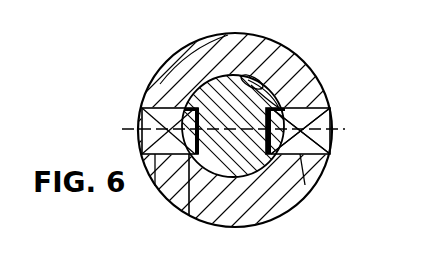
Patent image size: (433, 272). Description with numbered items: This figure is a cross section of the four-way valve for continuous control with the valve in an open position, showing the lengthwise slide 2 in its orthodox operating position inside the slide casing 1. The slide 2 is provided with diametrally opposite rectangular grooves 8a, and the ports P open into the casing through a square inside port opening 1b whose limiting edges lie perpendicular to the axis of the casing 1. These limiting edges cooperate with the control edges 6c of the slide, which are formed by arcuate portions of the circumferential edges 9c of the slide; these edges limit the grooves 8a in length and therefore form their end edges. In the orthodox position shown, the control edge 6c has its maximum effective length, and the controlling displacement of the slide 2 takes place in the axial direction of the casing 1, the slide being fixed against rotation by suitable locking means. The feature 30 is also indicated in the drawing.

The slide casing 1 is at (178, 65).
The square inside port opening 1b is at (155, 188).
The lengthwise slide 2 is at (240, 98).
The lubrication groove 30 is at (257, 80).
The control edge 6c is at (160, 147).
The rectangular groove 8a is at (189, 213).
The circumferential edge 9c is at (305, 153).
The port P is at (235, 115).